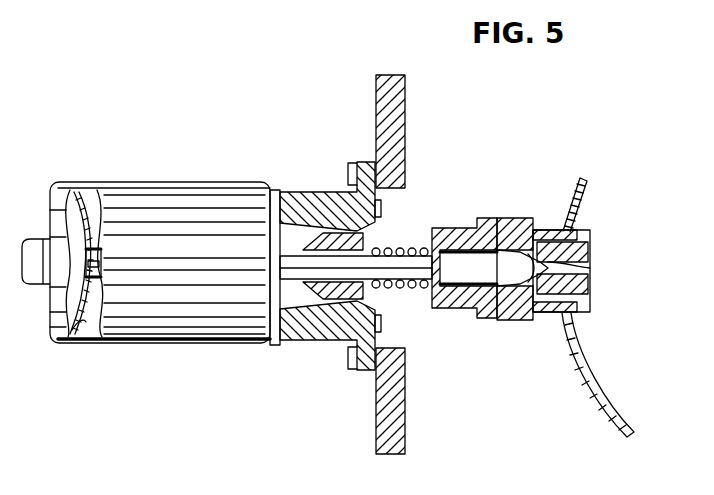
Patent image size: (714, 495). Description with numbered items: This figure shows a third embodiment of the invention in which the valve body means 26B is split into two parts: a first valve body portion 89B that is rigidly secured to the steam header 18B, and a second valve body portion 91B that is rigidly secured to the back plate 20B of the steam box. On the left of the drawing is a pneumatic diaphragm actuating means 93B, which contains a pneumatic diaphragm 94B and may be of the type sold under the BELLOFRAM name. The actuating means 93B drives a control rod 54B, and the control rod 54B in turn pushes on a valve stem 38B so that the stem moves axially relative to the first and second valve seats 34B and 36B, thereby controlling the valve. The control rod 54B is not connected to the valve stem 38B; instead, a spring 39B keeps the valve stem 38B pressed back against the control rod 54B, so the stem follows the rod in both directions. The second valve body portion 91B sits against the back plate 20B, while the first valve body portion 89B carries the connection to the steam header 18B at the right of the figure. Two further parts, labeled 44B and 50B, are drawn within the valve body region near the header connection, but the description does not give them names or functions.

The steam header 18B is at (578, 373).
The back plate 20B is at (398, 398).
The valve body means 26B is at (464, 196).
The first valve seat 34B is at (591, 262).
The second valve seat 36B is at (325, 192).
The valve stem 38B is at (404, 256).
The spring 39B is at (395, 288).
The collet 44B is at (526, 260).
The collet nut 50B is at (516, 310).
The control rod 54B is at (101, 241).
The first valve body portion 89B is at (488, 318).
The second valve body portion 91B is at (302, 342).
The pneumatic diaphragm actuating means 93B is at (183, 334).
The pneumatic diaphragm 94B is at (82, 320).